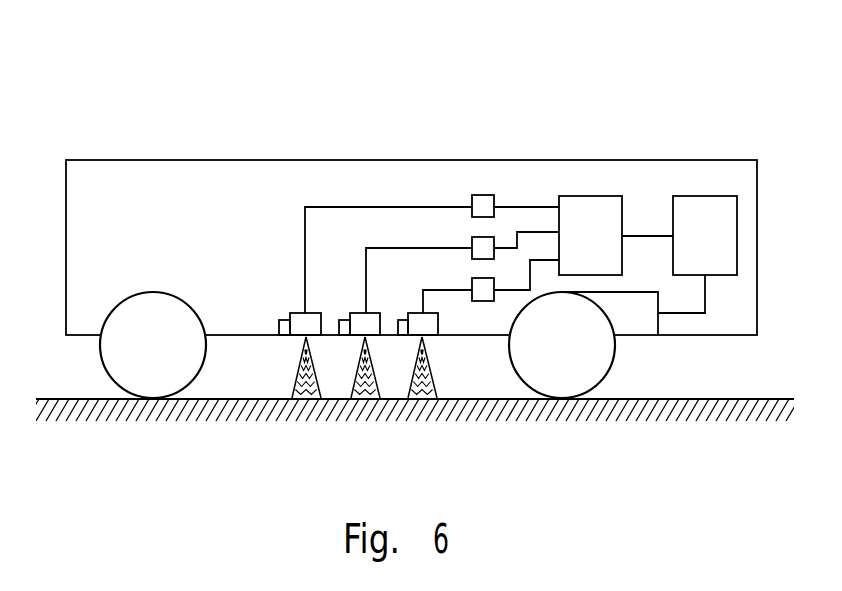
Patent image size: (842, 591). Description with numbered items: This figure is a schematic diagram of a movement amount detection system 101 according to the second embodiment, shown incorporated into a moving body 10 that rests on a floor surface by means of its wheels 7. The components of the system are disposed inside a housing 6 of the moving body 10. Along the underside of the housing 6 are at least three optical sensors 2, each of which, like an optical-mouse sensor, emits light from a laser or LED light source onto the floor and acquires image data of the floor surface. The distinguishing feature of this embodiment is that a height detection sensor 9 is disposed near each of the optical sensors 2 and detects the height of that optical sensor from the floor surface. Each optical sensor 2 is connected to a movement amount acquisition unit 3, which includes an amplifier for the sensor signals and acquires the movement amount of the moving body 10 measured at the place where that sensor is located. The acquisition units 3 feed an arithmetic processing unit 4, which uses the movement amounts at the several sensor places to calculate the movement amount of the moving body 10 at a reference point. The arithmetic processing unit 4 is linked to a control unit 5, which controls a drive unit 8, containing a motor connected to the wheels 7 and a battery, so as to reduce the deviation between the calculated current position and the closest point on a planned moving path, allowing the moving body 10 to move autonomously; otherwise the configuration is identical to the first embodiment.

The moving body 10 is at (90, 125).
The housing 6 is at (182, 160).
The wheels 7 is at (112, 375).
The drive unit 8 is at (632, 319).
The movement amount detection system 101 is at (217, 60).
The height detection sensors 9 is at (403, 320).
The optical sensors 2 is at (356, 313).
The movement amount acquisition unit 3 is at (472, 290).
The arithmetic processing unit 4 is at (597, 210).
The control unit 5 is at (703, 196).